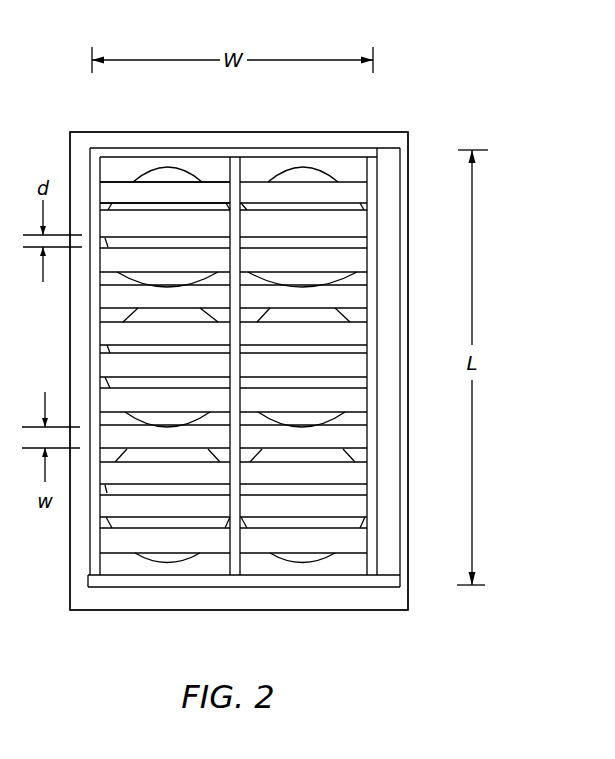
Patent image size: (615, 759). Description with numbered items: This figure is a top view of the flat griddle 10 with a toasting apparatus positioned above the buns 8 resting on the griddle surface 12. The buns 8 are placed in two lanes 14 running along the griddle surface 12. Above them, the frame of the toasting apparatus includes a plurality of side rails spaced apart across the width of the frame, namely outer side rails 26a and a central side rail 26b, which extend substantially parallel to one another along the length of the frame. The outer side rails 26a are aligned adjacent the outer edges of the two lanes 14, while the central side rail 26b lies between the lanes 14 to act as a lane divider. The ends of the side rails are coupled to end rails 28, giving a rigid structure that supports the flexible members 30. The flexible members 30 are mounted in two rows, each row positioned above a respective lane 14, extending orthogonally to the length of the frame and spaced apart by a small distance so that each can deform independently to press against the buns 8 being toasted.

The griddle 10 is at (160, 627).
The griddle surface 12 is at (335, 592).
The end rails 28 is at (362, 152).
The outer side rails 26a is at (97, 352).
The central side rail 26b is at (240, 212).
The lanes 14 is at (125, 167).
The buns 8 is at (172, 173).
The flexible members 30 is at (115, 193).